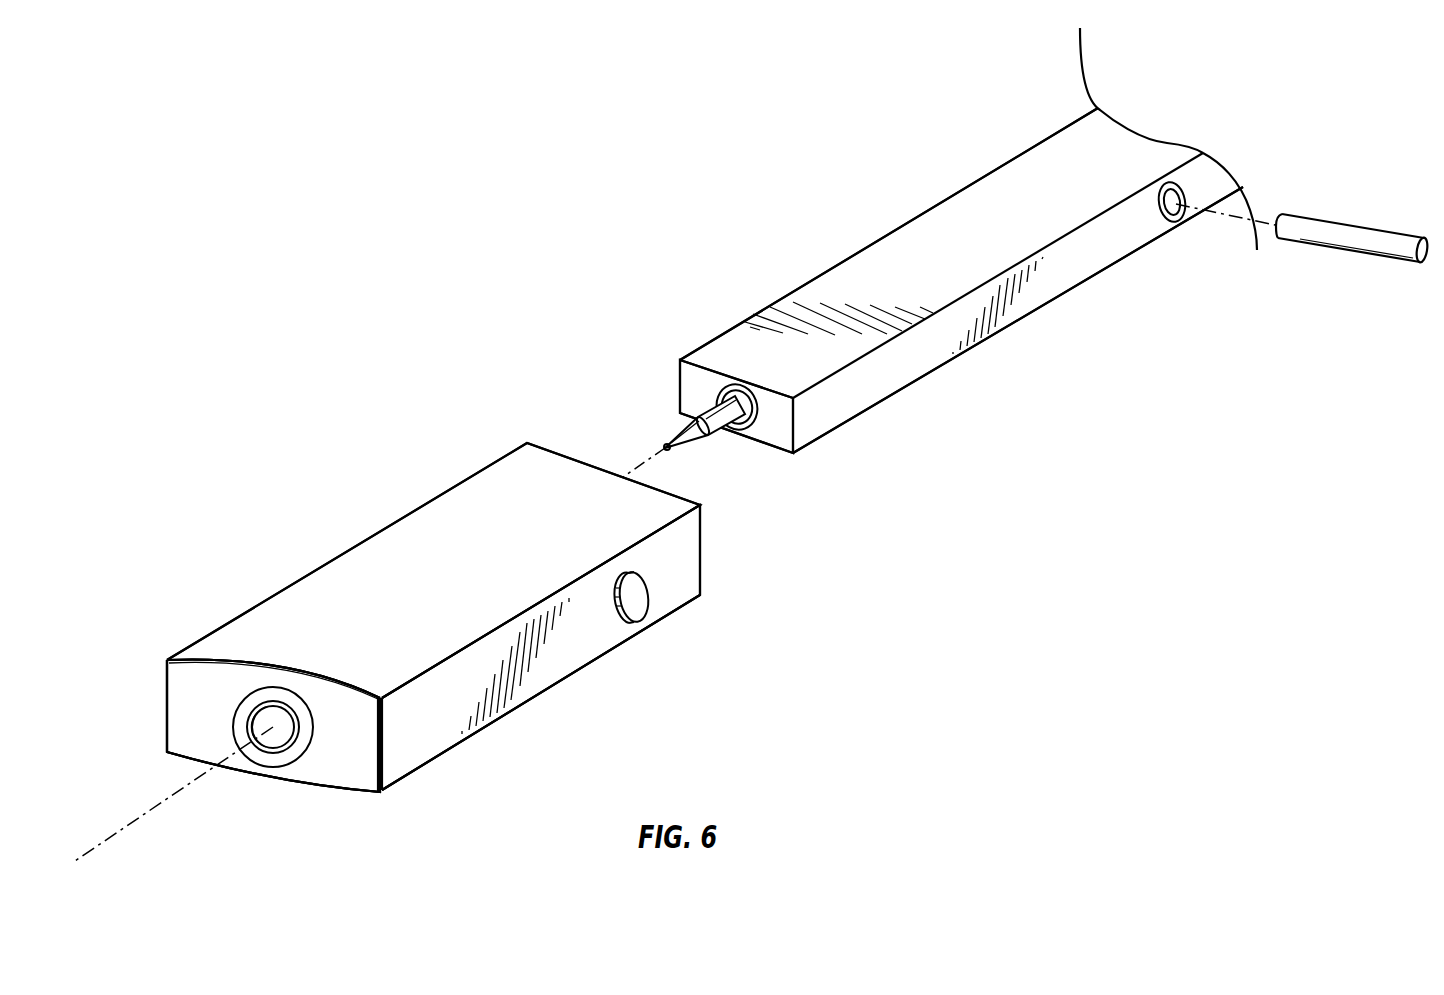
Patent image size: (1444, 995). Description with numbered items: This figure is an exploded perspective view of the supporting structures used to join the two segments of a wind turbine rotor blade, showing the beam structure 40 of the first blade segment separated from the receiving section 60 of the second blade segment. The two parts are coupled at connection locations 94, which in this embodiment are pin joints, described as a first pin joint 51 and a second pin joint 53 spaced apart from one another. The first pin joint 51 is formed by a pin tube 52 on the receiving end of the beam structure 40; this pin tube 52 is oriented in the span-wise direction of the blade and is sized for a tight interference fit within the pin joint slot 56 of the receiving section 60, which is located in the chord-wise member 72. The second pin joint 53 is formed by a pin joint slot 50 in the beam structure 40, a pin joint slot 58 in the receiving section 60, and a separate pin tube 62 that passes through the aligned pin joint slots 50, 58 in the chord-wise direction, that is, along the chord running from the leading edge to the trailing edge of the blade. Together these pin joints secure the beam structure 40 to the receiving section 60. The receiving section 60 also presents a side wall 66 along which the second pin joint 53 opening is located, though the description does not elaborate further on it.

The beam structure 40 is at (987, 197).
The pin tube 62 is at (1365, 222).
The pin joint slot 50 is at (1172, 218).
The second pin joint 53 is at (1222, 252).
The connection location 94 is at (1170, 255).
The first pin joint 51 is at (755, 482).
The pin tube 52 is at (683, 453).
The receiving section 60 is at (325, 553).
The chord-wise member 72 is at (195, 723).
The pin joint slot 56 is at (265, 742).
The pin joint slot 58 is at (633, 603).
The side wall 66 is at (560, 683).